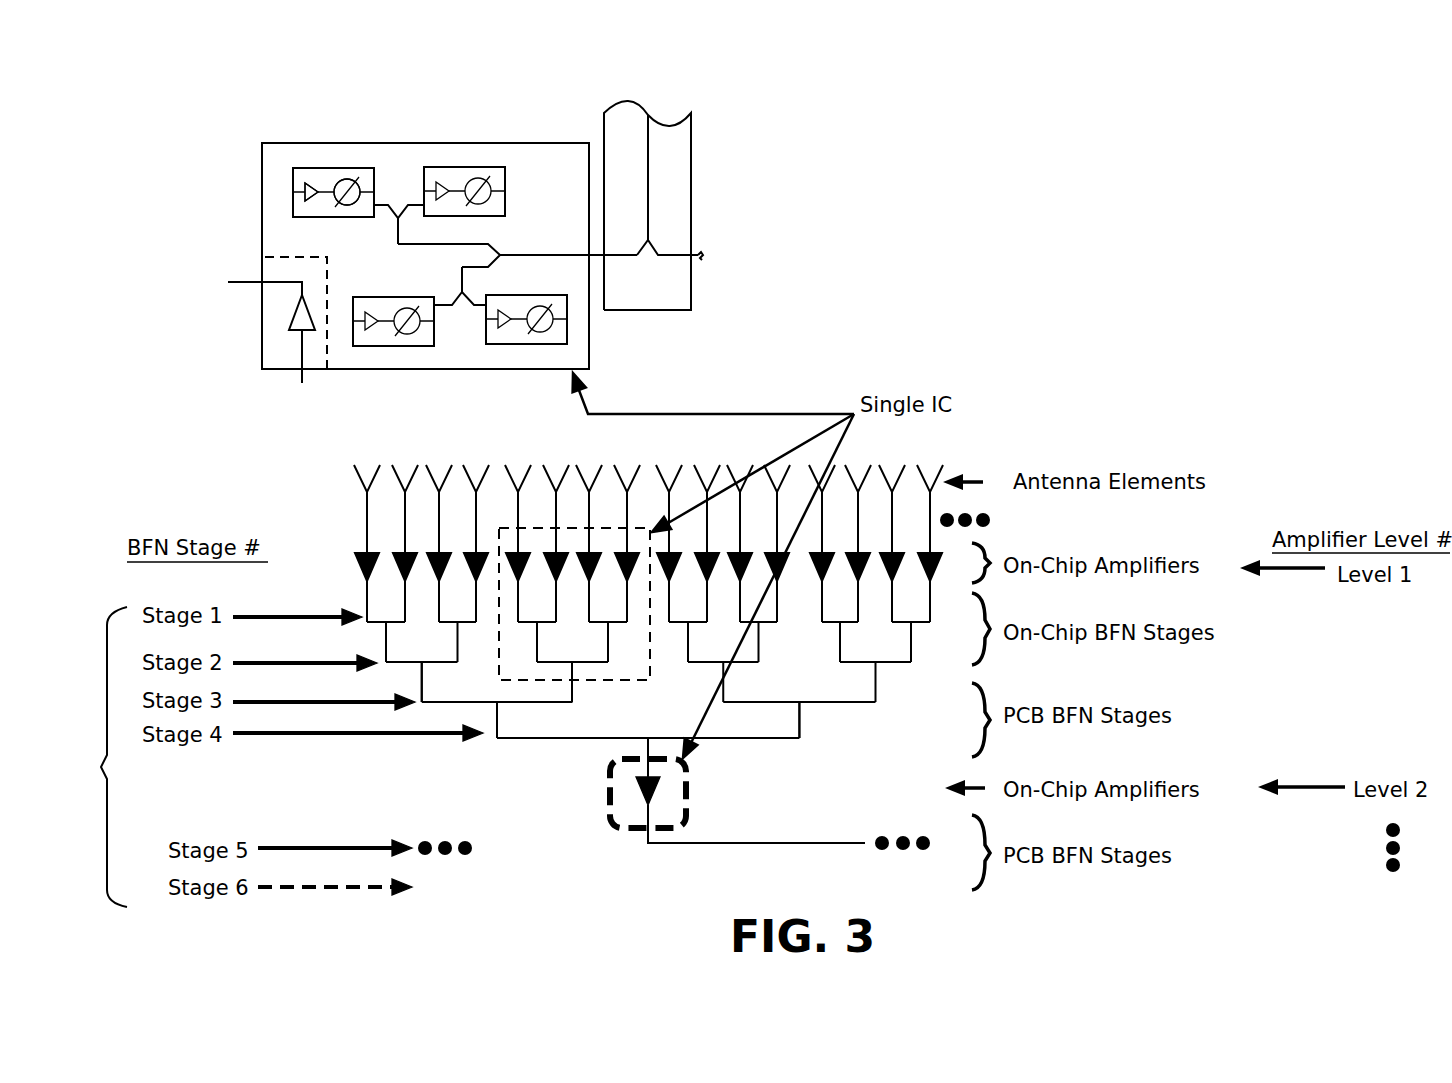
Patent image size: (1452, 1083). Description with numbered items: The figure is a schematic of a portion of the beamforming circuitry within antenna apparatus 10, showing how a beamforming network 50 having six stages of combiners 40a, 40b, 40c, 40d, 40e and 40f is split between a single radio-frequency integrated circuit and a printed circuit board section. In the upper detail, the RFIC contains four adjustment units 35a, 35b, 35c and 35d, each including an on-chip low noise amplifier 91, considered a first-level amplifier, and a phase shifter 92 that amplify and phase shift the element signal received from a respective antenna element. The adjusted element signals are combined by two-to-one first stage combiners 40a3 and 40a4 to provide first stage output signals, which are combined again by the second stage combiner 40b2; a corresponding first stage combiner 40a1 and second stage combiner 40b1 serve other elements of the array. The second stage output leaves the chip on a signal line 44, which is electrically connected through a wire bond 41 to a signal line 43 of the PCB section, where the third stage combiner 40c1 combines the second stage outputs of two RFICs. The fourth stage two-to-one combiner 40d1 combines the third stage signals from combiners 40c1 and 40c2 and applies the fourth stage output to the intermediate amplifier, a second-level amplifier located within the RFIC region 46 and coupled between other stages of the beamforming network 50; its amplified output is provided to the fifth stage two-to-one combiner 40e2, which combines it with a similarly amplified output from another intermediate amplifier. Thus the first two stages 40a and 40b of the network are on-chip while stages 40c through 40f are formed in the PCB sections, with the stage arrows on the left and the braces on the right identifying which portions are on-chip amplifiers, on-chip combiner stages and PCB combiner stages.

The antenna apparatus 10 is at (1001, 381).
The adjustment unit (AU) 35a is at (293, 175).
The adjustment unit (AU) 35b is at (495, 167).
The adjustment unit (AU) 35c is at (363, 297).
The adjustment unit (AU) 35d is at (565, 342).
The first stage combiners 40a is at (297, 606).
The second stage combiners 40b is at (305, 653).
The third stage combiners 40c is at (324, 691).
The fourth stage combiners 40d is at (358, 724).
The fifth stage combiners 40e is at (335, 840).
The sixth stage combiners 40f is at (335, 877).
The 2:1 combiner 40a1 is at (392, 623).
The 2:1 combiner 40a3 is at (392, 210).
The 2:1 combiner 40a4 is at (452, 307).
The 2:1 combiner 40b1 is at (437, 662).
The 2:1 combiner 40b2 is at (493, 248).
The third stage combiner 40c1 is at (653, 253).
The third stage combiner 40c2 is at (813, 703).
The fourth stage 2:1 combiner 40d1 is at (625, 738).
The fifth stage 2:1 combiner 40e2 is at (807, 843).
The wire bond 41 is at (597, 258).
The signal line 43 is at (619, 253).
The signal line 44 is at (568, 257).
The on-chip level 2 amplifier region 46 is at (277, 263).
The beamforming network (BFN) 50 is at (103, 757).
The low noise amplifier (LNA) 91 is at (318, 187).
The phase shifter 92 is at (347, 181).